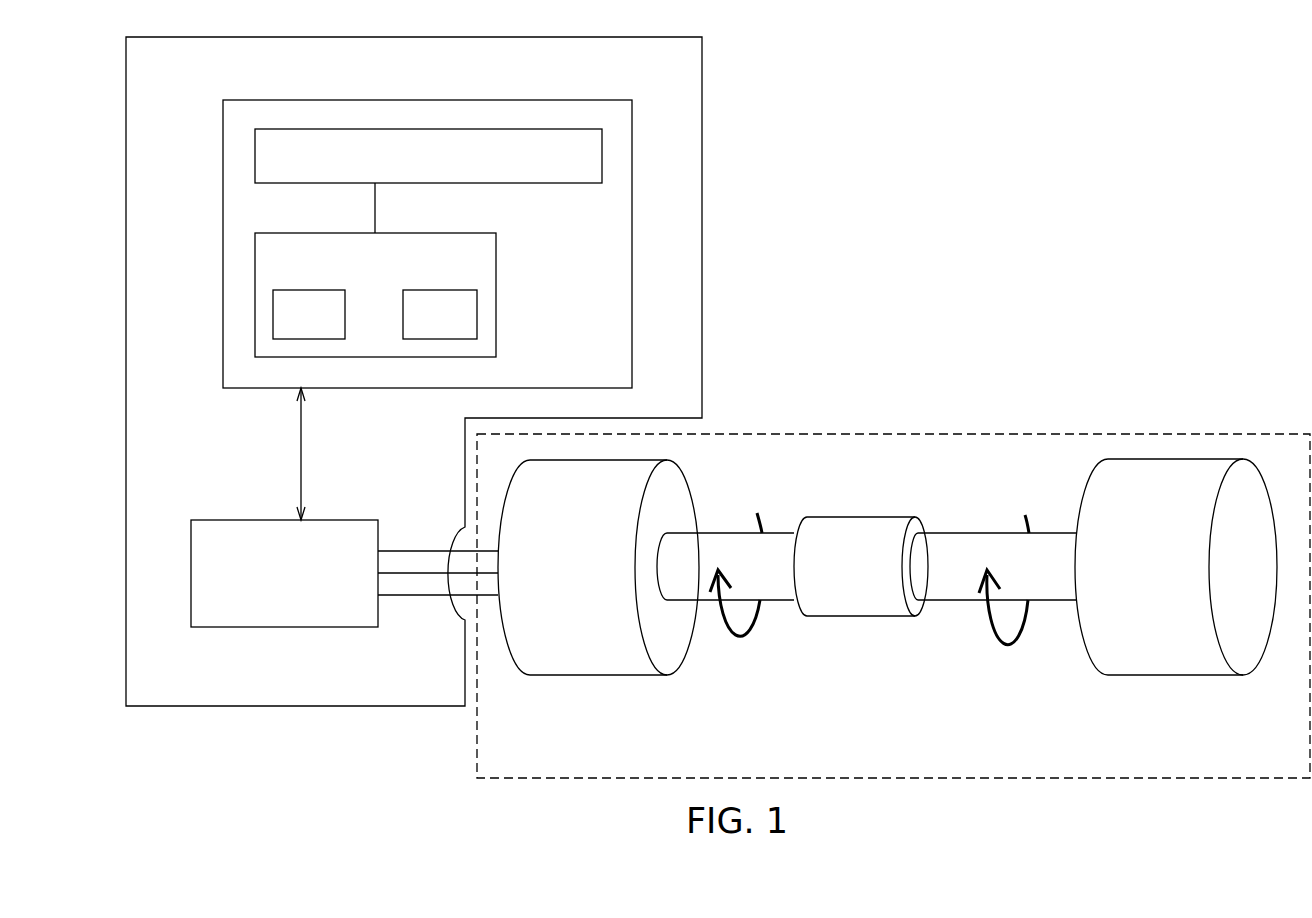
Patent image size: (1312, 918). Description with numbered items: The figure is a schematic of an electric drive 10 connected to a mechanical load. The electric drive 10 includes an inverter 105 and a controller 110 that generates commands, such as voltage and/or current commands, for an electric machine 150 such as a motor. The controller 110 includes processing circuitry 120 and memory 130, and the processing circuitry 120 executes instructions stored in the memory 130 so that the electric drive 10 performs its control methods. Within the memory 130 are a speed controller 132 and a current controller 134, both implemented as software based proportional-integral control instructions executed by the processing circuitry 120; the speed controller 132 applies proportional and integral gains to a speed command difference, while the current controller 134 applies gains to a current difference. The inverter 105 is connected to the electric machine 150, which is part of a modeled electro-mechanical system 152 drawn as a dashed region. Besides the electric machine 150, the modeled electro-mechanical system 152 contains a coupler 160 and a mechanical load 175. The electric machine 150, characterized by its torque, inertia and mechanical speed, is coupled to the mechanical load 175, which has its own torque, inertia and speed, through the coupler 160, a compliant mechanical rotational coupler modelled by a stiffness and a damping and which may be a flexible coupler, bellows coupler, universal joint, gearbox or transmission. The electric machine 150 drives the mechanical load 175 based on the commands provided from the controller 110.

The electric drive 10 is at (227, 707).
The inverter 105 is at (235, 520).
The controller 110 is at (223, 122).
The processing circuitry 120 is at (537, 185).
The memory 130 is at (496, 343).
The speed controller 132 is at (288, 327).
The current controller 134 is at (419, 327).
The electric machine 150 is at (585, 677).
The modeled electro-mechanical system 152 is at (870, 432).
The coupler 160 is at (853, 617).
The mechanical load 175 is at (1150, 677).